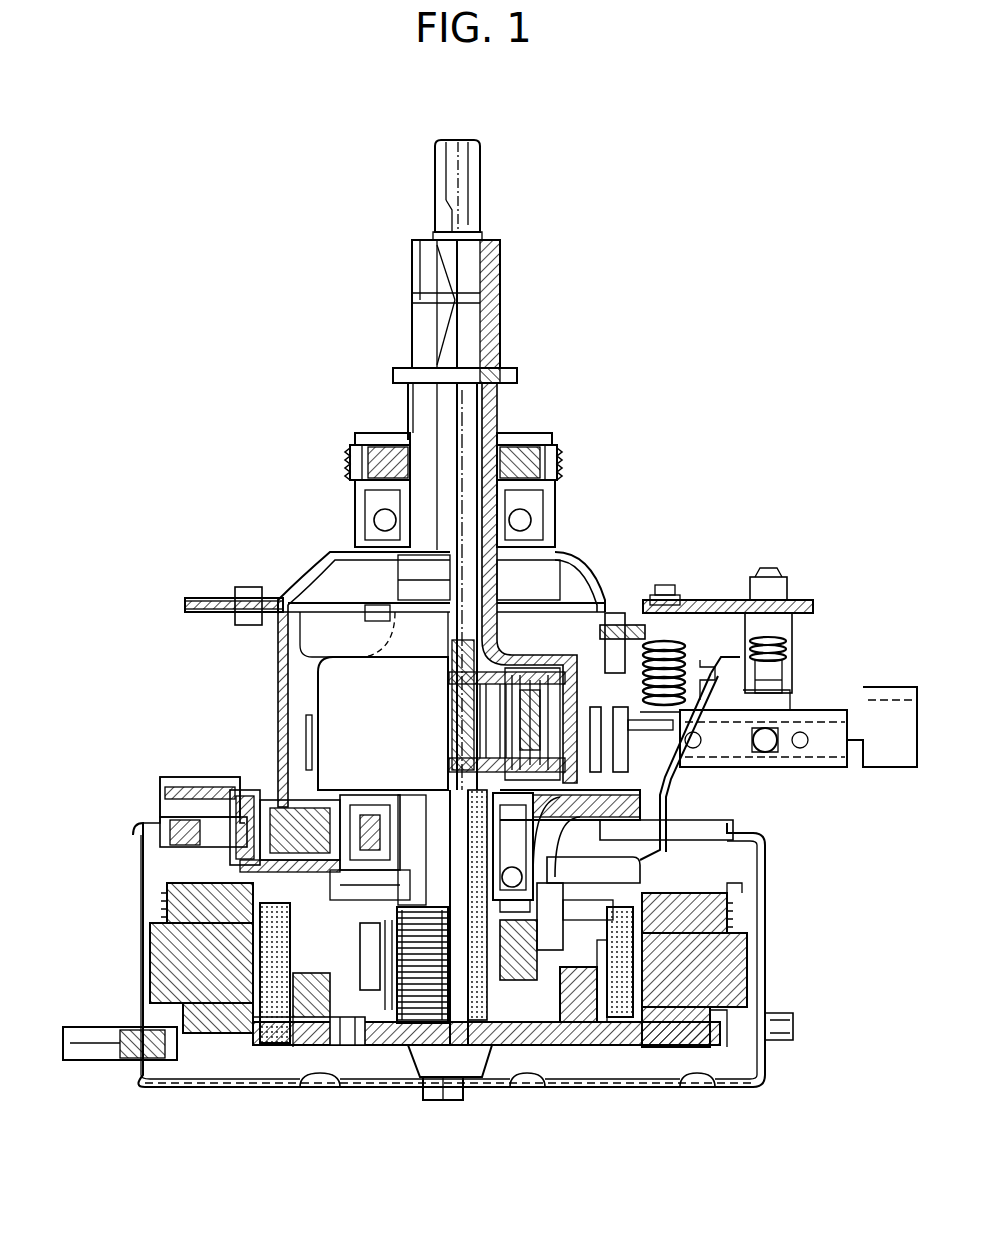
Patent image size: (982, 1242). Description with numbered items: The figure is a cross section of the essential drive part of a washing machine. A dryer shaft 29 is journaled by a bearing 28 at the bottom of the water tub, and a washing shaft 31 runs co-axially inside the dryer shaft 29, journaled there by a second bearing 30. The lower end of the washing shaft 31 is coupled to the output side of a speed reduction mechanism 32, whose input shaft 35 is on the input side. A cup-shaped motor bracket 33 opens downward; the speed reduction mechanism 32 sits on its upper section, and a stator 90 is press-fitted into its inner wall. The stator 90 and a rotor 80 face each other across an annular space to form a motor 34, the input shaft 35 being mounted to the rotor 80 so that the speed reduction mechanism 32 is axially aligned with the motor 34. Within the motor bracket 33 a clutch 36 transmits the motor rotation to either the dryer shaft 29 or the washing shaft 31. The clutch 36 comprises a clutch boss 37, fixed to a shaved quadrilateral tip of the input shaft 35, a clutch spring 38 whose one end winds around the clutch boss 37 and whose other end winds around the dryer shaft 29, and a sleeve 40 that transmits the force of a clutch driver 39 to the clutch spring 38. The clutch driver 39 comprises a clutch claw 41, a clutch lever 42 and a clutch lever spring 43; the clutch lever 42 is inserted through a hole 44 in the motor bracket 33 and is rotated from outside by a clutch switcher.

The bearing 28 is at (355, 512).
The dryer shaft 29 is at (497, 293).
The bearing 30 is at (497, 347).
The washing shaft 31 is at (481, 192).
The speed reduction mechanism 32 is at (548, 660).
The motor bracket 33 is at (765, 850).
The motor 34 is at (638, 1037).
The input shaft 35 is at (455, 803).
The clutch 36 is at (353, 983).
The clutch boss 37 is at (473, 1017).
The clutch spring 38 is at (418, 998).
The clutch driver 39 is at (700, 650).
The sleeve 40 is at (517, 977).
The clutch claw 41 is at (538, 987).
The clutch lever 42 is at (660, 850).
The clutch lever spring 43 is at (793, 637).
The hole 44 is at (693, 823).
The rotor 80 is at (578, 1022).
The stator 90 is at (720, 983).